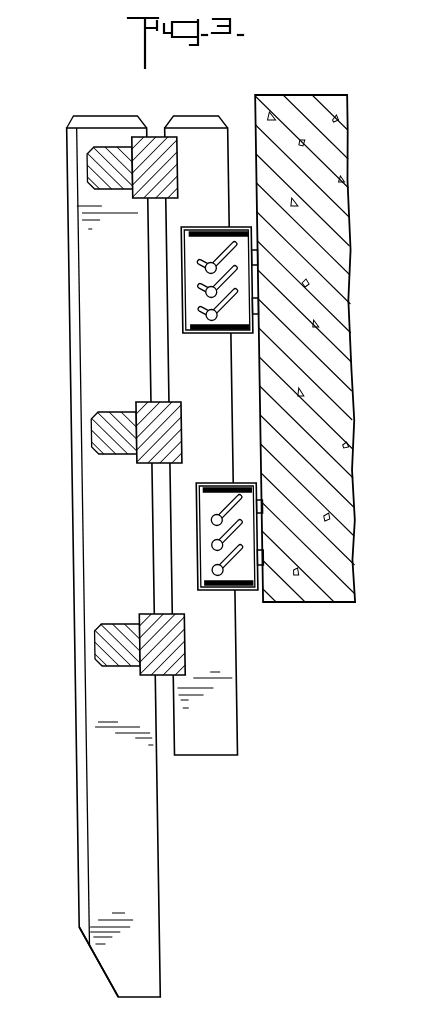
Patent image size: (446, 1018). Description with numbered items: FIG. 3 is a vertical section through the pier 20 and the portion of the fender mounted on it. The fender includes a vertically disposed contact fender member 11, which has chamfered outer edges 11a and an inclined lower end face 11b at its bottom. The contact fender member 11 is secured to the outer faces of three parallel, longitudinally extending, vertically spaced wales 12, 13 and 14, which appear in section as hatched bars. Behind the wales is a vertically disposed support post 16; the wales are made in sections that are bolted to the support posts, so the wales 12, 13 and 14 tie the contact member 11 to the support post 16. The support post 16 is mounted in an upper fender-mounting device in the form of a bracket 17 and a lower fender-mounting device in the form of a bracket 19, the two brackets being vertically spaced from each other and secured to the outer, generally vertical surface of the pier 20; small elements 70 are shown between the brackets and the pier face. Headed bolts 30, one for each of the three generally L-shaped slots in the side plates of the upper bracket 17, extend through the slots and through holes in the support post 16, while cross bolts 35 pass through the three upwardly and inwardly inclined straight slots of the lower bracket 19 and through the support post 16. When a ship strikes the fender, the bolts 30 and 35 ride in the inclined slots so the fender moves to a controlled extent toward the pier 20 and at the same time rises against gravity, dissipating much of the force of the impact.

The contact fender member 11 is at (141, 878).
The chamfered outer edge 11a is at (73, 870).
The inclined lower end face 11b is at (85, 963).
The wale 12 is at (173, 157).
The wale 13 is at (172, 432).
The wale 14 is at (168, 644).
The support post 16 is at (205, 711).
The upper bracket 17 is at (190, 241).
The lower bracket 19 is at (195, 507).
The pier 20 is at (303, 114).
The headed bolt 30 is at (197, 313).
The cross bolt 35 is at (199, 570).
The mounting tabs 70 is at (256, 257).